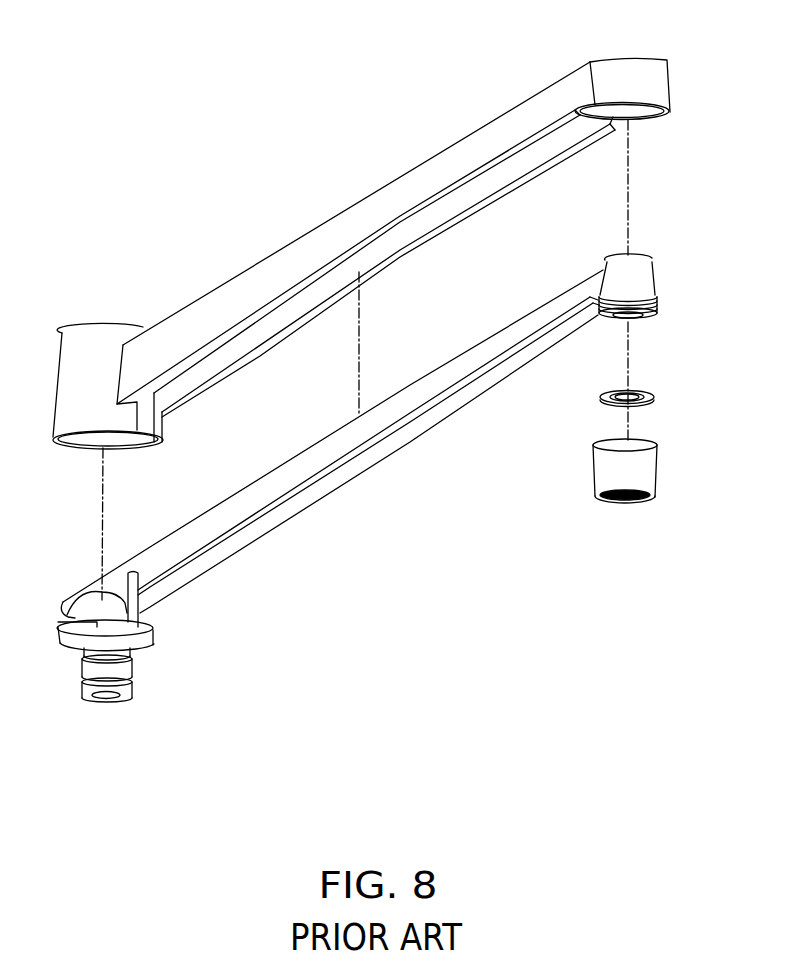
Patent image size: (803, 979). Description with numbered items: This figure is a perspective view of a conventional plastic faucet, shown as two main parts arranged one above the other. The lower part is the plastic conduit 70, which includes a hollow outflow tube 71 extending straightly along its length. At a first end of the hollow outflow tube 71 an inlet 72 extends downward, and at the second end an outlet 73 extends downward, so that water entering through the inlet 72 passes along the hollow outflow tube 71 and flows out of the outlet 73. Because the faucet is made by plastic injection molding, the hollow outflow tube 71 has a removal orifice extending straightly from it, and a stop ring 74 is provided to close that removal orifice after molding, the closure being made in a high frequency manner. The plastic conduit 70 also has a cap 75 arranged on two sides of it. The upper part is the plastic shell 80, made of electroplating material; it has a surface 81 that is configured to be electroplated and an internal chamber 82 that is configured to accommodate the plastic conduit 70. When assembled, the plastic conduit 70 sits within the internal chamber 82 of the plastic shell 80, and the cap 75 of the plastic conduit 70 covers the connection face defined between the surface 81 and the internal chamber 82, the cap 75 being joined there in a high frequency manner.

The plastic conduit 70 is at (388, 236).
The hollow outflow tube 71 is at (287, 480).
The inlet 72 is at (108, 699).
The outlet 73 is at (622, 320).
The stop ring 74 is at (60, 618).
The cap 75 is at (198, 552).
The plastic shell 80 is at (362, 196).
The surface 81 is at (512, 123).
The internal chamber 82 is at (280, 318).